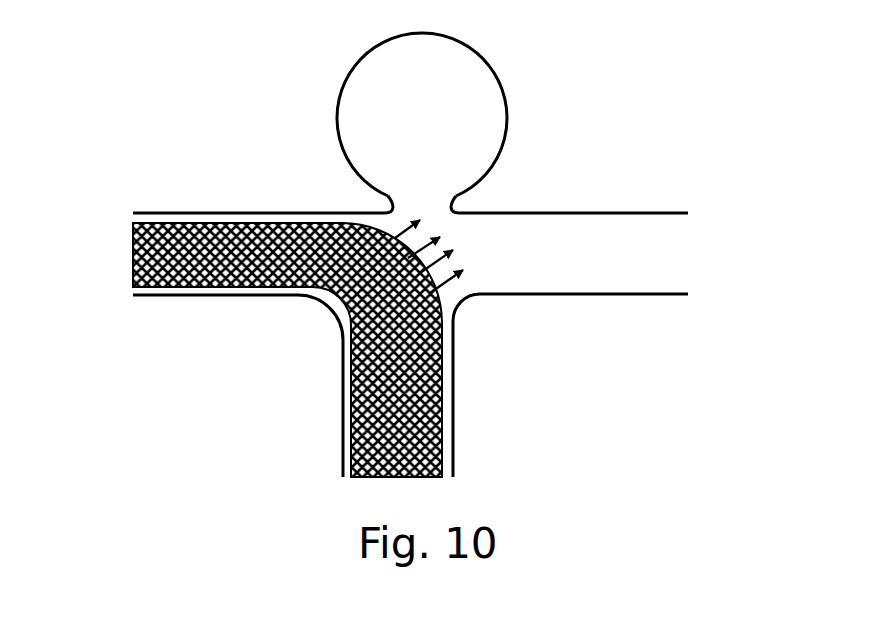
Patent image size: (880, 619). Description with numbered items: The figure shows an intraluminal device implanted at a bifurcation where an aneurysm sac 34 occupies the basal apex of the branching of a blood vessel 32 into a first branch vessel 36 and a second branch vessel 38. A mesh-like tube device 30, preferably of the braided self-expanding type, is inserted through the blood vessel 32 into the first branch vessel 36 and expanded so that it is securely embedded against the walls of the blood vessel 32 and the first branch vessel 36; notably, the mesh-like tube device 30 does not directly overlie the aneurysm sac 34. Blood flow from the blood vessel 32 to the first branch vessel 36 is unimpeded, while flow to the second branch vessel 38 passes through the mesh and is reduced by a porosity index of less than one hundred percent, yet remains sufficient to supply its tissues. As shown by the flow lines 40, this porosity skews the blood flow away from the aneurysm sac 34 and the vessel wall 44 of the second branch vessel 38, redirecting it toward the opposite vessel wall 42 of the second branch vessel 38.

The mesh-like tube device 30 is at (205, 287).
The blood vessel 32 is at (335, 380).
The aneurysm sac 34 is at (460, 40).
The first branch vessel 36 is at (135, 258).
The second branch vessel 38 is at (683, 257).
The flow lines 40 is at (402, 235).
The vessel wall 42 is at (603, 298).
The vessel wall 44 is at (600, 211).